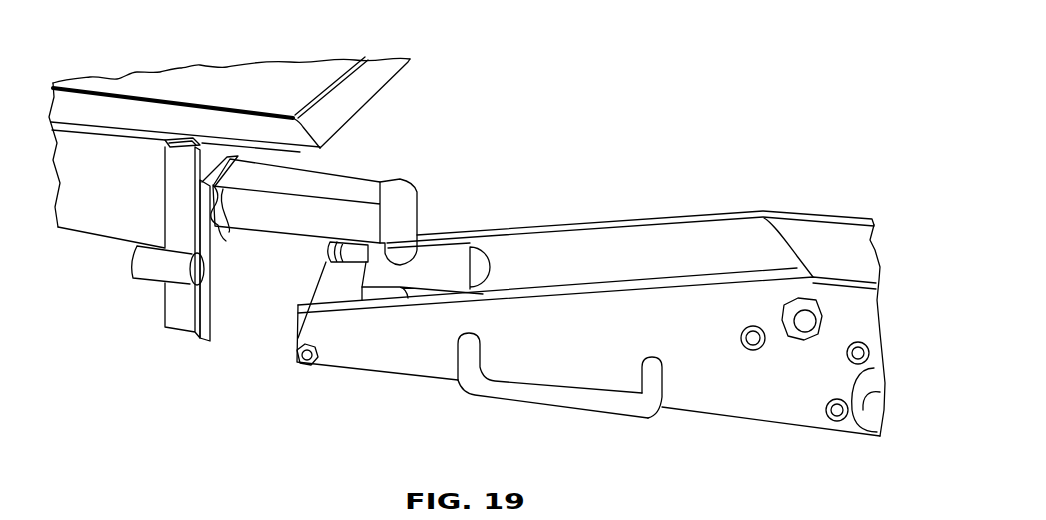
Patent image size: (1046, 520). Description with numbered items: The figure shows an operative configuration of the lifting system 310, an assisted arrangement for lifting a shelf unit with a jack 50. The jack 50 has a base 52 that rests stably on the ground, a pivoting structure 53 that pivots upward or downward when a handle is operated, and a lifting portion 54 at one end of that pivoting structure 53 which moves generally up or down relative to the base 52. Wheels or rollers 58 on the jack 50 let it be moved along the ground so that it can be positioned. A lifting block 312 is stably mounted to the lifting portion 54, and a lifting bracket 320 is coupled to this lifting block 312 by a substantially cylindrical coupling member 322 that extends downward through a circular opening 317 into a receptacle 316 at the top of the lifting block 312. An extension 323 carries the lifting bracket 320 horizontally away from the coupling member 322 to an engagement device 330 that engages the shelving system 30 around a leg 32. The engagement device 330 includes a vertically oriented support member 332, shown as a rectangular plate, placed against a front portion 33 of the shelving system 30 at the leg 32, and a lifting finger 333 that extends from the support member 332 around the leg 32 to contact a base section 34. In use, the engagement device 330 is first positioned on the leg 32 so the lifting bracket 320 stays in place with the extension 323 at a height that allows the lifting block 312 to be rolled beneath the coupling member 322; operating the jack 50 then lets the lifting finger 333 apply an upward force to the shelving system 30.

The shelving system 30 is at (377, 75).
The leg 32 is at (180, 197).
The front portion 33 is at (177, 160).
The base section 34 is at (146, 247).
The jack 50 is at (692, 390).
The base 52 is at (795, 405).
The pivoting structure 53 is at (645, 257).
The lifting portion 54 is at (420, 302).
The wheels or rollers 58 is at (335, 285).
The lifting system 310 is at (473, 151).
The lifting block 312 is at (455, 275).
The receptacle 316 is at (390, 282).
The circular opening 317 is at (423, 257).
The lifting bracket 320 is at (350, 210).
The coupling member 322 is at (403, 217).
The extension 323 is at (274, 212).
The engagement device 330 is at (160, 355).
The support member 332 is at (203, 338).
The lifting finger 333 is at (152, 265).